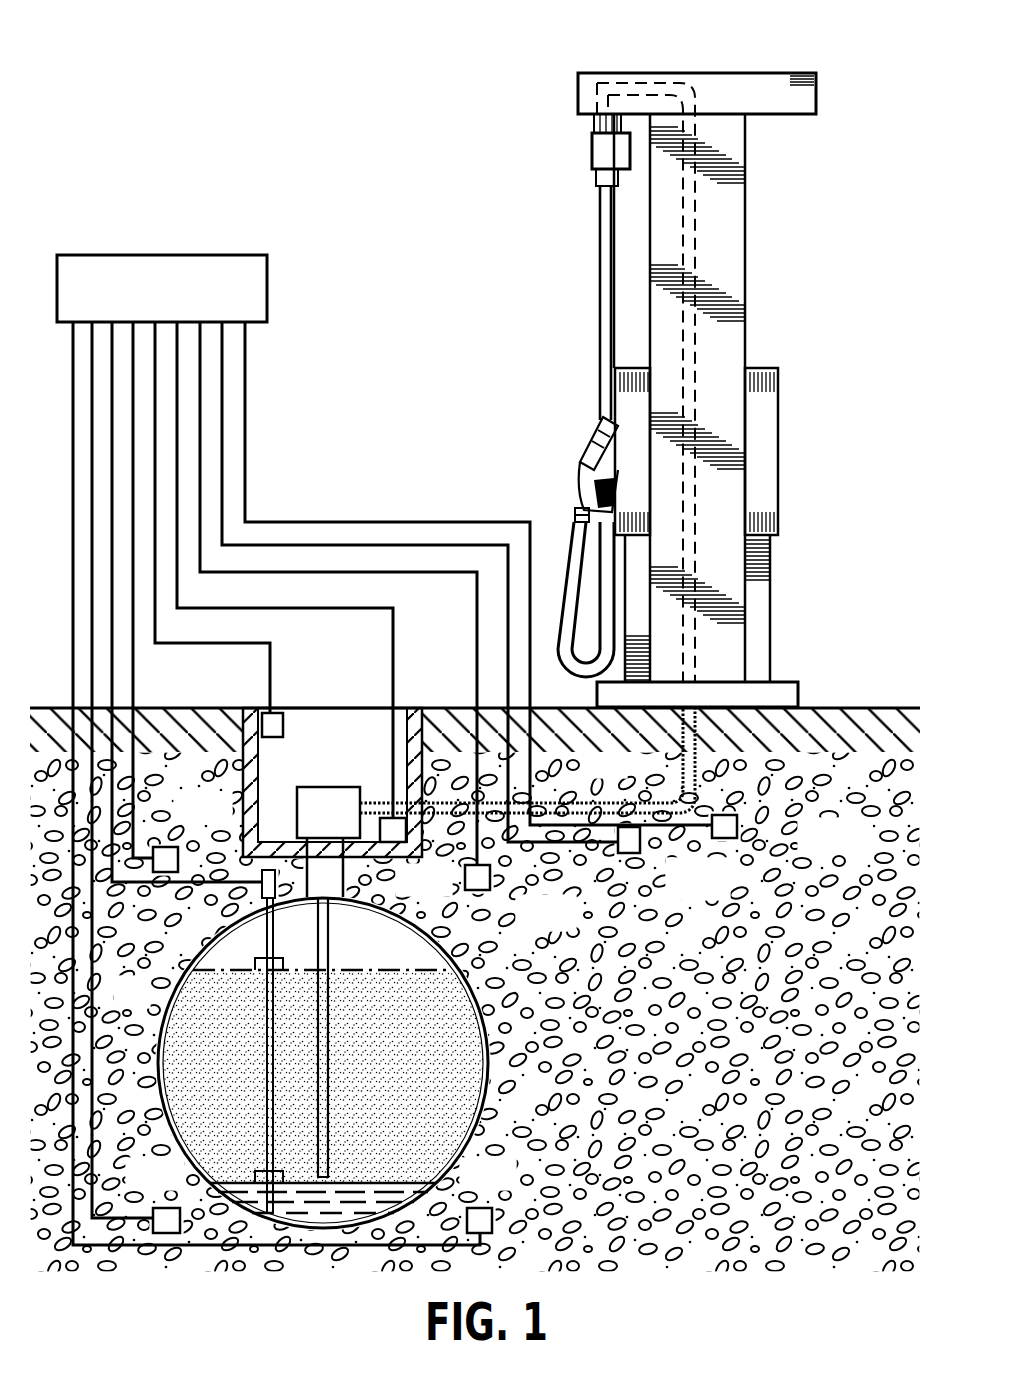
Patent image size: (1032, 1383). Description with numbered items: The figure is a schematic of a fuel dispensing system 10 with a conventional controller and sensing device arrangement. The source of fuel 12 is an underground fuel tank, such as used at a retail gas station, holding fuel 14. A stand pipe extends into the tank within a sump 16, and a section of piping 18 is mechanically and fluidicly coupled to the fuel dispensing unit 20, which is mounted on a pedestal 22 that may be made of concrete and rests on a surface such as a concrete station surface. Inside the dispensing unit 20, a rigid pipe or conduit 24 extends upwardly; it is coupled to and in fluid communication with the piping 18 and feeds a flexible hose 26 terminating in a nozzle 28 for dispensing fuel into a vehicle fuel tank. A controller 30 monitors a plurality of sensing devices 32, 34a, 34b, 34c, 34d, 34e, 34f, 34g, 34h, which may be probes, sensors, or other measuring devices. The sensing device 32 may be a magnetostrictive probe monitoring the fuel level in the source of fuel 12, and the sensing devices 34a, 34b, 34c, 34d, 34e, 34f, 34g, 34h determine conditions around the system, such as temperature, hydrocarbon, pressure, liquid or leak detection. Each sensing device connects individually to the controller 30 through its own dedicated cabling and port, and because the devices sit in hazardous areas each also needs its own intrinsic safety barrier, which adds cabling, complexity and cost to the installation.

The fuel dispensing system 10 is at (257, 92).
The source of fuel 12 is at (164, 1012).
The fuel 14 is at (325, 1055).
The sump 16 is at (332, 802).
The section of piping 18 is at (602, 800).
The fuel dispensing unit 20 is at (752, 72).
The pedestal 22 is at (798, 700).
The rigid pipe or conduit 24 is at (693, 405).
The flexible hose 26 is at (600, 246).
The nozzle 28 is at (583, 468).
The controller 30 is at (58, 262).
The sensing device 32 is at (265, 1077).
The sensing device 34a is at (185, 848).
The sensing device 34b is at (165, 1208).
The sensing device 34c is at (492, 1210).
The sensing device 34d is at (377, 838).
The sensing device 34e is at (292, 713).
The sensing device 34f is at (492, 880).
The sensing device 34g is at (645, 845).
The sensing device 34h is at (737, 825).